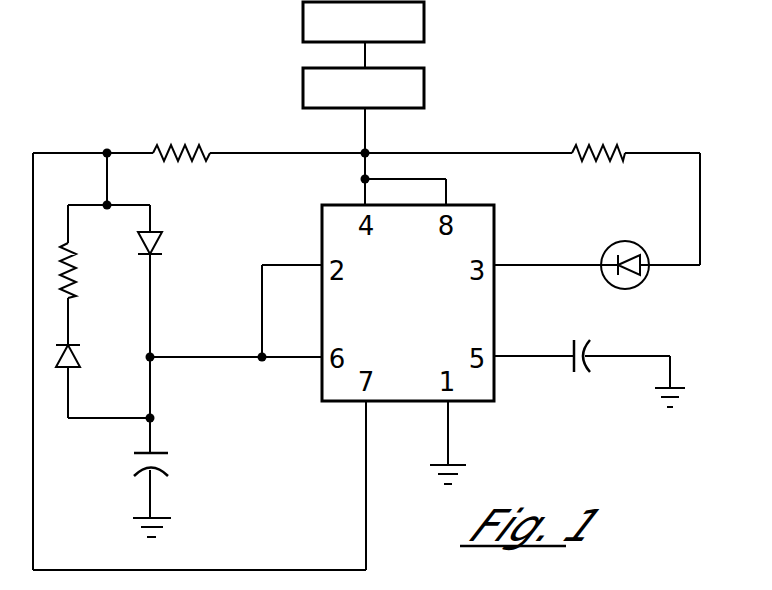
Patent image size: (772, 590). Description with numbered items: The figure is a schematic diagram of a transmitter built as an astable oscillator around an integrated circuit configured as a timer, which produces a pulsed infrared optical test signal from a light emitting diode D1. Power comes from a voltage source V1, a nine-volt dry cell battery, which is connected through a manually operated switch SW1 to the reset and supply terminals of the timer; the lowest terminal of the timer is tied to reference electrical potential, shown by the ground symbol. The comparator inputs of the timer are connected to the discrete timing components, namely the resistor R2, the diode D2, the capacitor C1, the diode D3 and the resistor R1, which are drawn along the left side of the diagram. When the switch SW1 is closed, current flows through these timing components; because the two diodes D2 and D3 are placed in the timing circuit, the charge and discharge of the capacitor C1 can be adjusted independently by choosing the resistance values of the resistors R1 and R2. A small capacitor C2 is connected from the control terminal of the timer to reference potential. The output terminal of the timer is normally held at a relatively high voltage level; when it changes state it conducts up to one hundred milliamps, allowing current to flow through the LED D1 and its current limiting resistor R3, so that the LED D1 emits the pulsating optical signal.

The voltage source V1 is at (363, 22).
The switch SW1 is at (363, 88).
The resistor R1 is at (87, 270).
The resistor R2 is at (181, 136).
The current limiting resistor R3 is at (598, 136).
The light emitting diode D1 is at (625, 283).
The diode D2 is at (171, 239).
The diode D3 is at (90, 356).
The capacitor C1 is at (170, 469).
The capacitor C2 is at (583, 371).